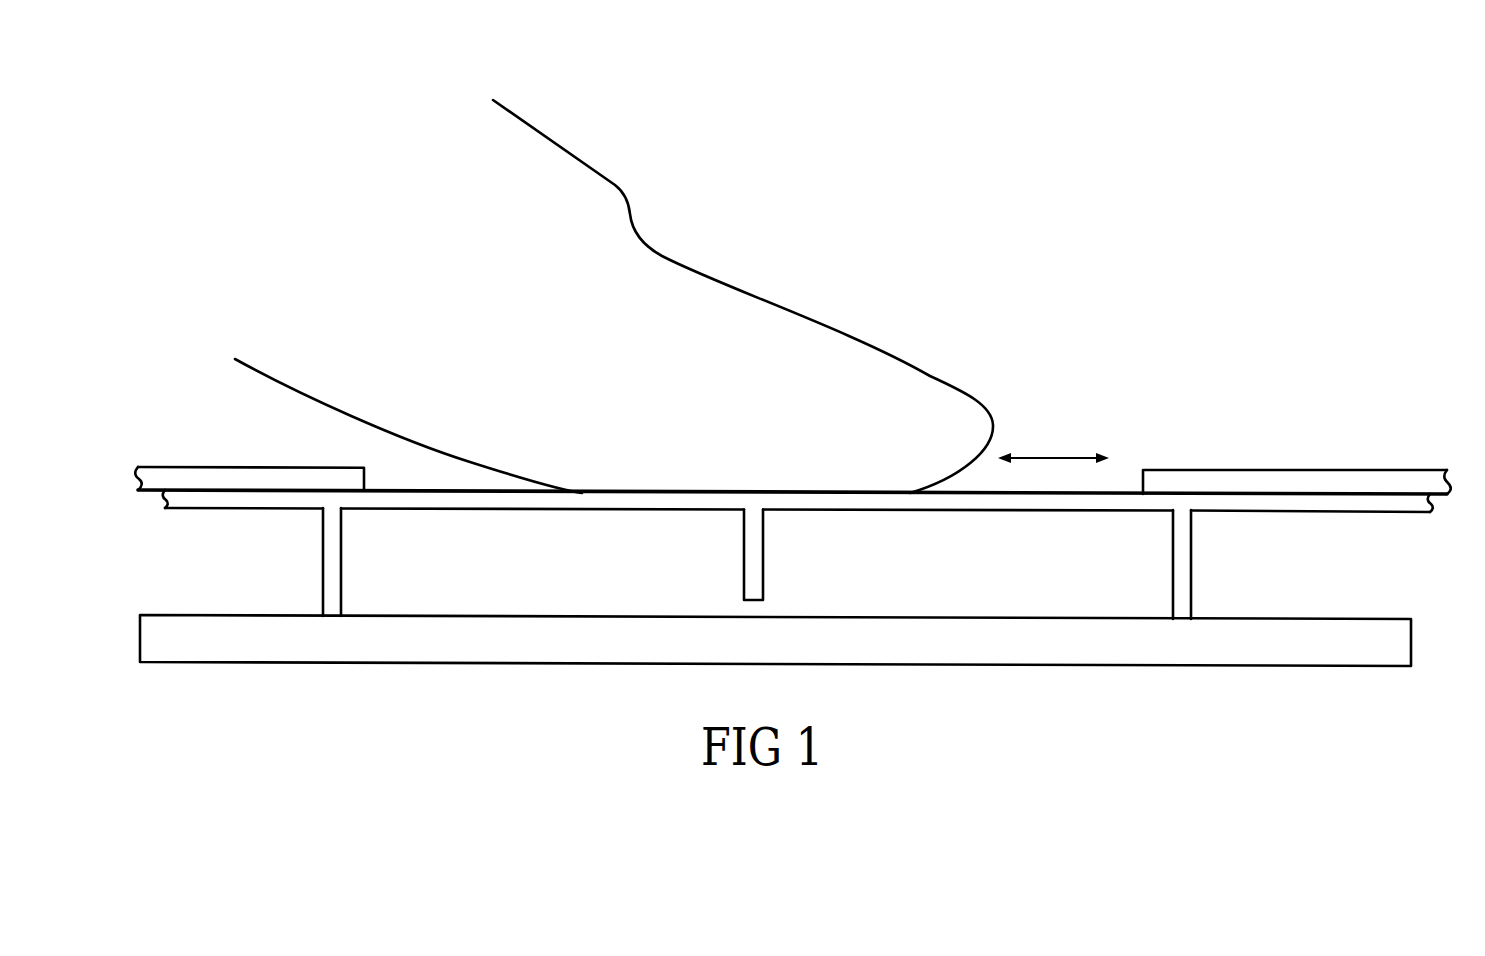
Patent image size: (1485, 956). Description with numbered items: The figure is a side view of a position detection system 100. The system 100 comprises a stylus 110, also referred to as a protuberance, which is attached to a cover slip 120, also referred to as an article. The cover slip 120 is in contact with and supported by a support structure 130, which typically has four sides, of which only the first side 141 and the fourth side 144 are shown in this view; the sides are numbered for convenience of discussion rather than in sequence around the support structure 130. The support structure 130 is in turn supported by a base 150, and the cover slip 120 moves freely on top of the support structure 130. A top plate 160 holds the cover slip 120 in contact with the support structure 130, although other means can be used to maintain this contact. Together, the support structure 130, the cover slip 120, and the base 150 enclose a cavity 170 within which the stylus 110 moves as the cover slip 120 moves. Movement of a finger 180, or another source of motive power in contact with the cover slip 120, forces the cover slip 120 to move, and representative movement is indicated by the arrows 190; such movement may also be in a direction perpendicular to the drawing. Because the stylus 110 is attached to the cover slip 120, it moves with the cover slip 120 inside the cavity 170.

The position detection system 100 is at (1131, 197).
The stylus 110 is at (763, 569).
The cover slip 120 is at (867, 510).
The support structure 130 is at (323, 574).
The first side 141 is at (1152, 572).
The fourth side 144 is at (360, 569).
The base 150 is at (538, 665).
The top plate 160 is at (1314, 470).
The cavity 170 is at (1007, 583).
The finger 180 is at (566, 368).
The arrows 190 is at (1049, 458).